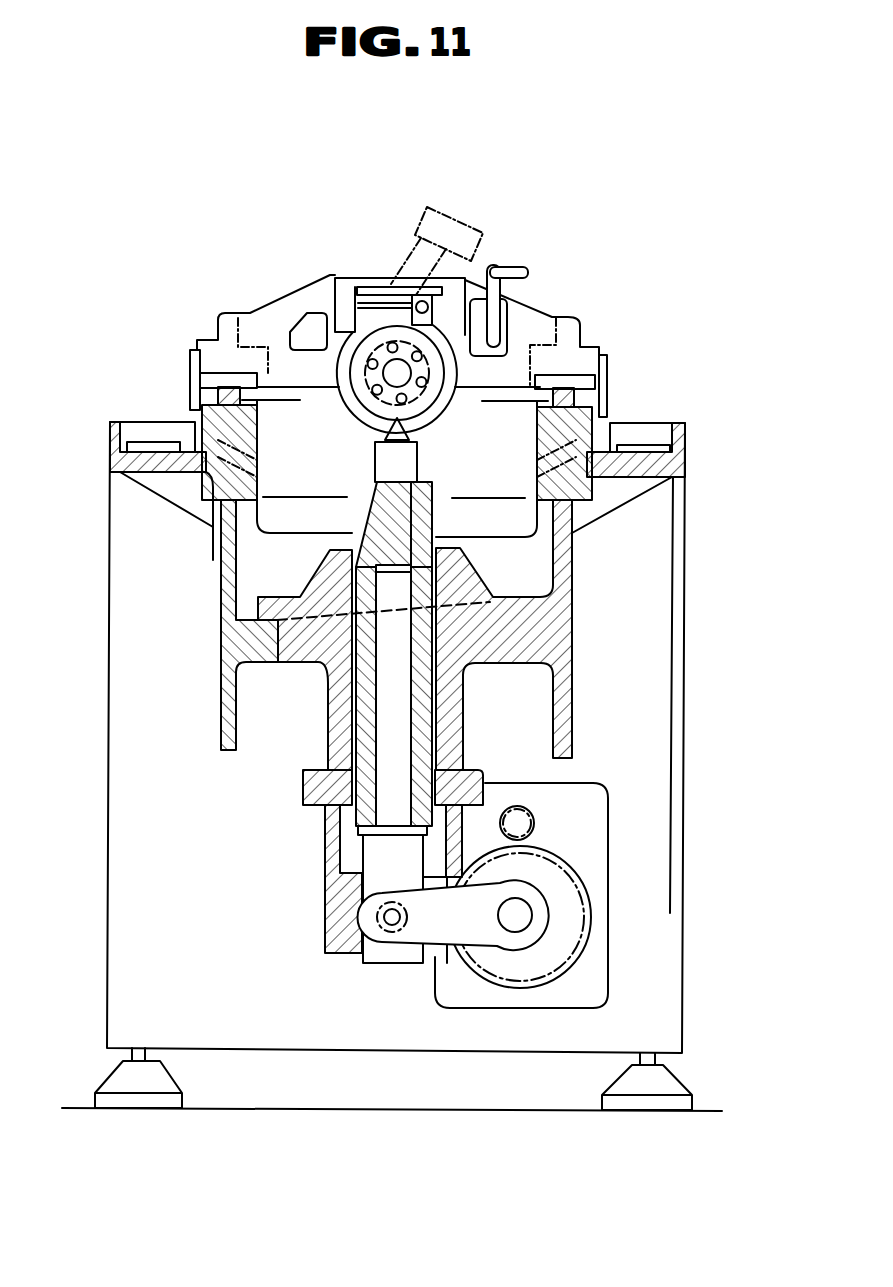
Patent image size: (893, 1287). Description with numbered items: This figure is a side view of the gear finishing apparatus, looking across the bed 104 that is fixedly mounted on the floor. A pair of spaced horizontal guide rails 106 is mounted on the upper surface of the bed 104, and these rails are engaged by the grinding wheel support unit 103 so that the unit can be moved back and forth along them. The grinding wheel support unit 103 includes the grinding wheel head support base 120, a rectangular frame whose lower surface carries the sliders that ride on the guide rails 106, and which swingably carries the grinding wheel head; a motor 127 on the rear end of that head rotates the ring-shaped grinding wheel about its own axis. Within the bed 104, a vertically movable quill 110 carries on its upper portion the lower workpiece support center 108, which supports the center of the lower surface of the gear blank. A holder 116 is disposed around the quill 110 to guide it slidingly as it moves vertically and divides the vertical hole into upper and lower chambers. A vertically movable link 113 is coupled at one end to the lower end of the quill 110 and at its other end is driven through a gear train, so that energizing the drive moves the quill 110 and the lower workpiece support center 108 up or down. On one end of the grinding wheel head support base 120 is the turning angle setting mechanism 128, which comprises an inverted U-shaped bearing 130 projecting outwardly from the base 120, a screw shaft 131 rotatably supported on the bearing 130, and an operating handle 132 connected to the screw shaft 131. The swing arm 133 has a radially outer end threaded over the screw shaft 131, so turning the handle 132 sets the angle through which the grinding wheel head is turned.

The grinding wheel support unit 103 is at (581, 219).
The bed 104 is at (655, 968).
The guide rails 106 is at (217, 395).
The lower workpiece support center 108 is at (407, 438).
The quill 110 is at (362, 478).
The vertically movable link 113 is at (433, 923).
The holder 116 is at (302, 640).
The grinding wheel head support base 120 is at (208, 338).
The motor 127 is at (420, 205).
The turning angle setting mechanism 128 is at (547, 294).
The inverted U-shaped bearing 130 is at (345, 302).
The screw shaft 131 is at (391, 318).
The operating handle 132 is at (515, 270).
The swing arm 133 is at (390, 312).